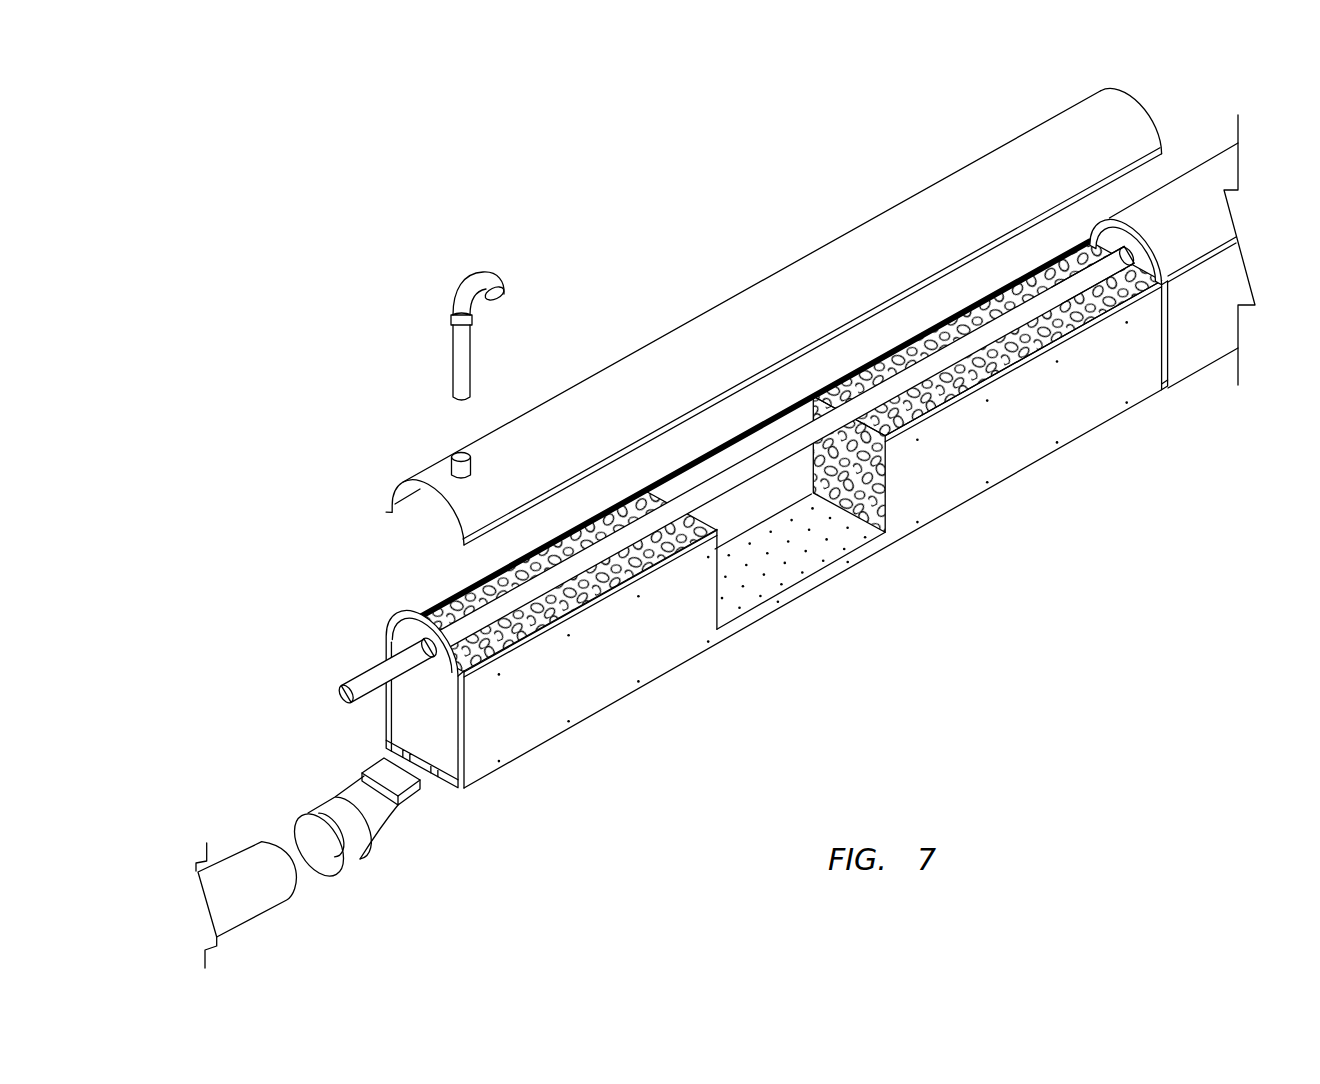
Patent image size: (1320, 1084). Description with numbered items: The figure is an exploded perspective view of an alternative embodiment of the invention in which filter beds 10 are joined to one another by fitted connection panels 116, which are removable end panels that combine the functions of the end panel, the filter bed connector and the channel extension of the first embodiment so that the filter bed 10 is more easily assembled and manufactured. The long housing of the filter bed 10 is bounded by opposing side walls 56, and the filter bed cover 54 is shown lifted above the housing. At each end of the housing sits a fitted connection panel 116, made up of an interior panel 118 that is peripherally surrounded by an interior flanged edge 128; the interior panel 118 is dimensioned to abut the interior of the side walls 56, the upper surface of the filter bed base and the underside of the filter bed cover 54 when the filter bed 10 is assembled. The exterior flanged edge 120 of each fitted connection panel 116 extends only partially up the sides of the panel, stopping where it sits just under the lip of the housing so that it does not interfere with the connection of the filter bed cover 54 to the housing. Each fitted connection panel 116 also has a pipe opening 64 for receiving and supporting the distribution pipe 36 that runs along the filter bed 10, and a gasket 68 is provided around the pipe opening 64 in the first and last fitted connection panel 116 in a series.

The filter bed 10 is at (1217, 381).
The distribution pipe 36 is at (782, 440).
The filter bed cover 54 is at (726, 312).
The side wall 56 is at (976, 440).
The pipe opening 64 is at (1110, 243).
The gasket 68 is at (427, 645).
The fitted connection panel 116 is at (391, 605).
The interior panel 118 is at (415, 712).
The exterior flanged edge 120 is at (463, 771).
The interior flanged edge 128 is at (416, 610).